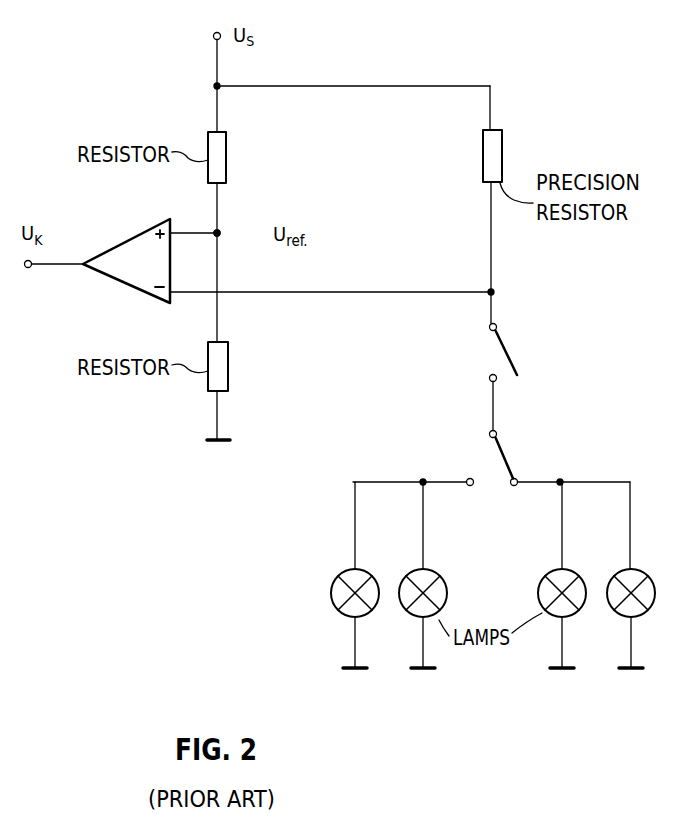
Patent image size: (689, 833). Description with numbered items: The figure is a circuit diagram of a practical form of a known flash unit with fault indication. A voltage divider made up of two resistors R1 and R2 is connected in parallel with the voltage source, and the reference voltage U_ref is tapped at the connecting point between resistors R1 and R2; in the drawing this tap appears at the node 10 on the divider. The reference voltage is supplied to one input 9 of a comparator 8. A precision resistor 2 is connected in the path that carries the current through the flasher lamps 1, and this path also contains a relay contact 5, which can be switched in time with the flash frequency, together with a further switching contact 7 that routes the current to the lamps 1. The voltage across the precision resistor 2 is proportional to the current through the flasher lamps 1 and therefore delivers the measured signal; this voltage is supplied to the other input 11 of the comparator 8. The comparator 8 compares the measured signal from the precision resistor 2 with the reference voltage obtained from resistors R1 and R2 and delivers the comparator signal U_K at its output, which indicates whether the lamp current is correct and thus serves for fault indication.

The flasher lamps 1 is at (350, 574).
The precision resistor 2 is at (502, 158).
The relay contact 5 is at (509, 349).
The switch 7 is at (506, 457).
The comparator 8 is at (111, 256).
The input 9 is at (172, 230).
The reference voltage node 10 is at (220, 233).
The other input 11 is at (172, 295).
The resistor R1 is at (228, 160).
The resistor R2 is at (228, 365).